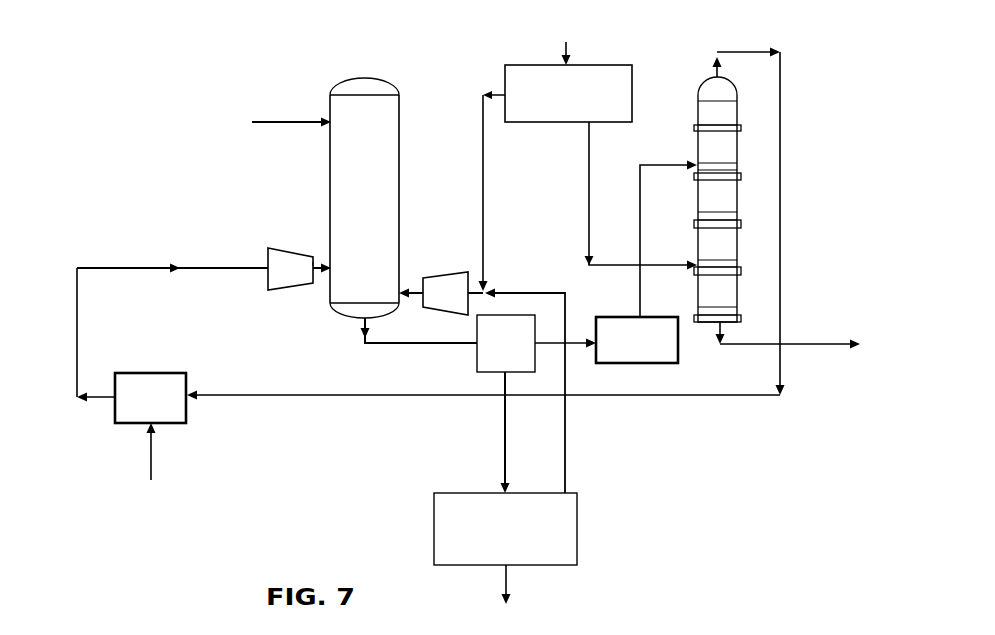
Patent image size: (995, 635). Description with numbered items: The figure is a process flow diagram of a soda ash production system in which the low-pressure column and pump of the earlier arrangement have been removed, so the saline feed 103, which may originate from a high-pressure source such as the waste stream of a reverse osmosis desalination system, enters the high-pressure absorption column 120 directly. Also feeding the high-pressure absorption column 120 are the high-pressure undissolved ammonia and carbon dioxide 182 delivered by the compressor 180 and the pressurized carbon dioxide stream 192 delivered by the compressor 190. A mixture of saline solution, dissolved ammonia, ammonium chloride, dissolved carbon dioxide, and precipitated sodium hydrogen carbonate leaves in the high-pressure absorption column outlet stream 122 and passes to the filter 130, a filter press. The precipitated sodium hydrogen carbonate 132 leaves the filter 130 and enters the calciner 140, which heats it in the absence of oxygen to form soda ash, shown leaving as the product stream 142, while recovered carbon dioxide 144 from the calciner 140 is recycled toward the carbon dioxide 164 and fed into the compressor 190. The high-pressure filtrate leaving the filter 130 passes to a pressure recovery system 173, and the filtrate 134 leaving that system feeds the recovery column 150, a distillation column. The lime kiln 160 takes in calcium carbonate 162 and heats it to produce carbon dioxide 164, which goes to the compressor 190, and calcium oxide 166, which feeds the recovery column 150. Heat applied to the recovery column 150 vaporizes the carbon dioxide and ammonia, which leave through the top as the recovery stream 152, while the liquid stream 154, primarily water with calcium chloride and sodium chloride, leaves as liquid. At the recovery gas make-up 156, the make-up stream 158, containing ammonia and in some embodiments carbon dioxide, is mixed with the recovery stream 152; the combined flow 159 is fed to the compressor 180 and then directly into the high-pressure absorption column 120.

The saline feed 103 is at (291, 110).
The high-pressure absorption column 120 is at (364, 198).
The high-pressure absorption column outlet stream 122 is at (419, 329).
The filter 130 is at (536, 343).
The precipitated sodium hydrogen carbonate 132 is at (505, 443).
The filtrate 134 is at (665, 229).
The calciner 140 is at (505, 529).
The product stream 142 is at (528, 590).
The recovered carbon dioxide 144 is at (546, 391).
The recovery column 150 is at (723, 195).
The recovery stream 152 is at (486, 224).
The liquid stream 154 is at (788, 332).
The recovery gas make-up 156 is at (150, 398).
The make-up stream 158 is at (130, 451).
The feed of mixed recovery and make-up streams 159 is at (73, 335).
The lime kiln 160 is at (568, 93).
The calcium carbonate 162 is at (562, 41).
The carbon dioxide 164 is at (483, 182).
The calcium oxide 166 is at (641, 196).
The pressure recovery system 173 is at (637, 340).
The compressor 180 is at (292, 280).
The high-pressure undissolved ammonia and carbon dioxide 182 is at (318, 262).
The compressor 190 is at (443, 280).
The pressurized carbon dioxide stream 192 is at (409, 288).